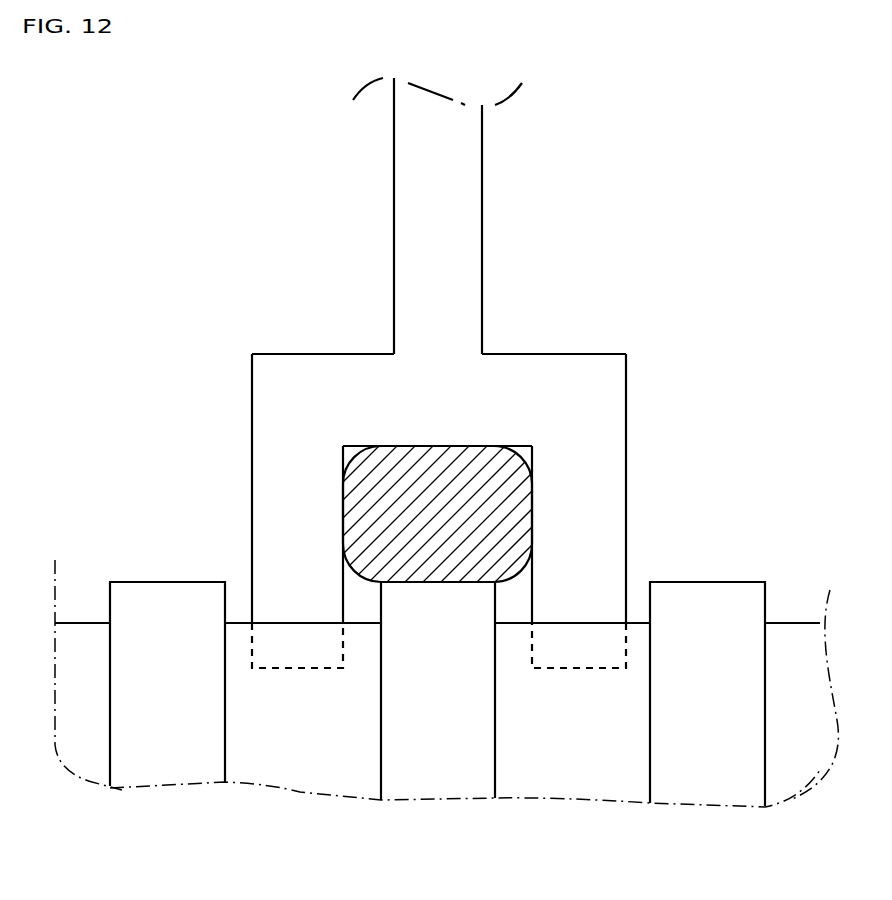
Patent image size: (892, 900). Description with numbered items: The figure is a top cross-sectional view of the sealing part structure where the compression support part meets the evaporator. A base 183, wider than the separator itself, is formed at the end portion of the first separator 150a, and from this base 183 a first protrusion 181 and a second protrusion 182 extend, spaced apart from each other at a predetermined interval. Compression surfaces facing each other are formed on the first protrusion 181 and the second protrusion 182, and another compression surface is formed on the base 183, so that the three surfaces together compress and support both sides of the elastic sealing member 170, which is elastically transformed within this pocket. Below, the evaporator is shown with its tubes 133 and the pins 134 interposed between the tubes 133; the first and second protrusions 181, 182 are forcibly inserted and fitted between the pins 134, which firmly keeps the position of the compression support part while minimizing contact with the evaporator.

The first separator 150a is at (440, 203).
The elastic sealing member 170 is at (387, 517).
The first protrusion 181 is at (287, 550).
The second protrusion 182 is at (588, 548).
The base 183 is at (535, 360).
The tubes 133 is at (165, 757).
The pins 134 is at (293, 758).